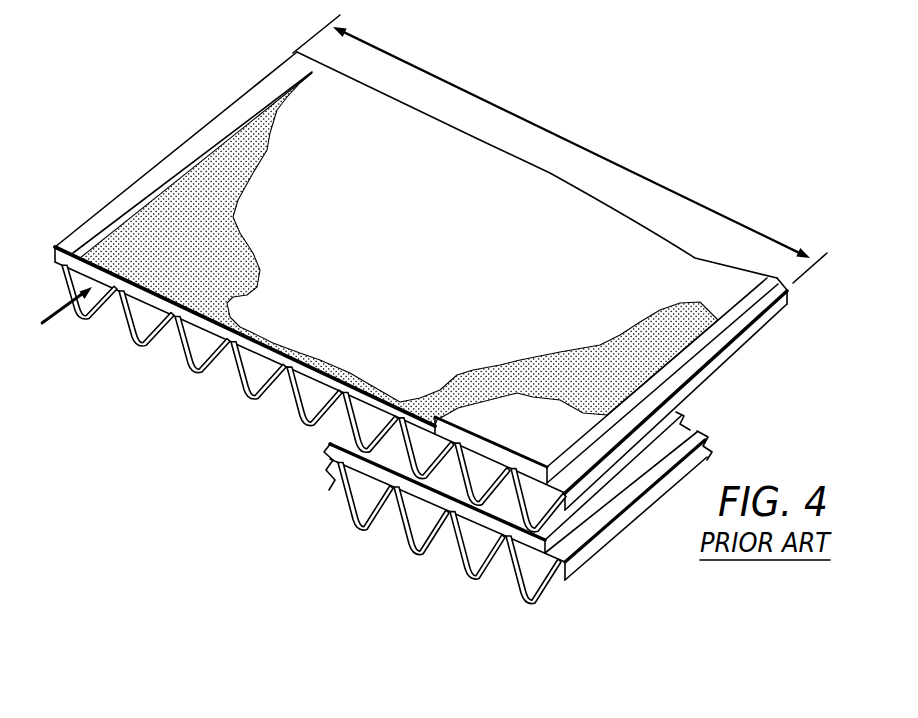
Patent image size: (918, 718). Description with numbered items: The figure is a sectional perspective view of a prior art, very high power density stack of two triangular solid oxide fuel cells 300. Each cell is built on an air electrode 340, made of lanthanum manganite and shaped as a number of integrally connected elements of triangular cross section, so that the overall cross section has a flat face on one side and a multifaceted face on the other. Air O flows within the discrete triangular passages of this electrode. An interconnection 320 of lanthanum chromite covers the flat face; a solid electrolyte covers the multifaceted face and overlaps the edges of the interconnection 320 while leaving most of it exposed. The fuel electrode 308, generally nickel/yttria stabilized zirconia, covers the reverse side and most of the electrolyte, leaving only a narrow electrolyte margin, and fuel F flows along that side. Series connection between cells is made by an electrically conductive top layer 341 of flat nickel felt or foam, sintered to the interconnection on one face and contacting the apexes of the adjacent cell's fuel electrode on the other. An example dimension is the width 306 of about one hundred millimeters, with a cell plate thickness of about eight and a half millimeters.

The triangular solid oxide fuel cells 300 is at (97, 170).
The width 306 is at (600, 152).
The fuel electrode 308 is at (270, 397).
The interconnection 320 is at (175, 213).
The air electrode 340 is at (233, 383).
The electrically conductive top layer 341 is at (549, 428).
The air O is at (57, 319).
The fuel F is at (434, 496).